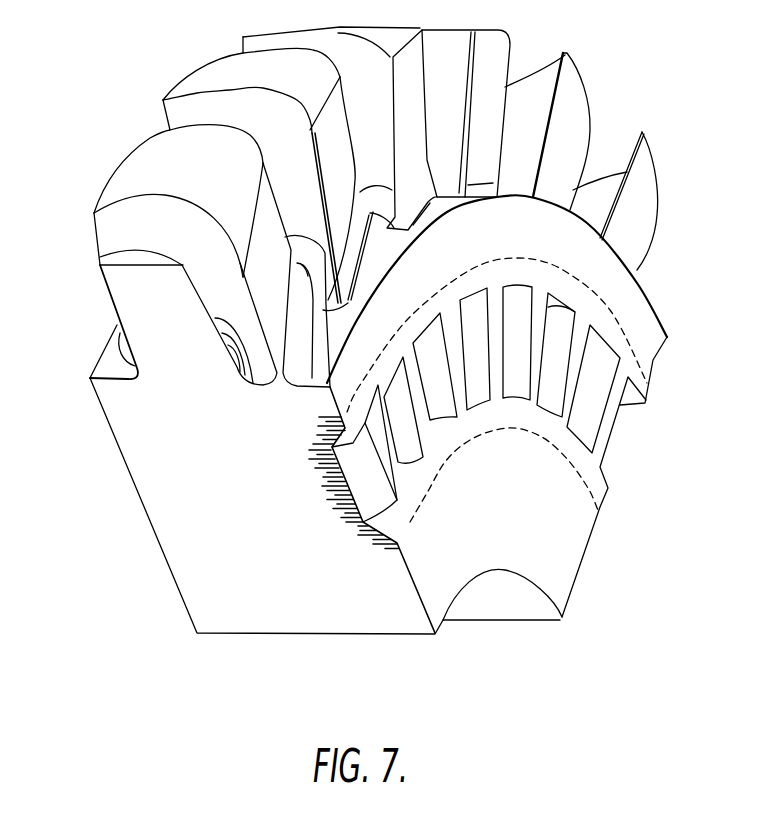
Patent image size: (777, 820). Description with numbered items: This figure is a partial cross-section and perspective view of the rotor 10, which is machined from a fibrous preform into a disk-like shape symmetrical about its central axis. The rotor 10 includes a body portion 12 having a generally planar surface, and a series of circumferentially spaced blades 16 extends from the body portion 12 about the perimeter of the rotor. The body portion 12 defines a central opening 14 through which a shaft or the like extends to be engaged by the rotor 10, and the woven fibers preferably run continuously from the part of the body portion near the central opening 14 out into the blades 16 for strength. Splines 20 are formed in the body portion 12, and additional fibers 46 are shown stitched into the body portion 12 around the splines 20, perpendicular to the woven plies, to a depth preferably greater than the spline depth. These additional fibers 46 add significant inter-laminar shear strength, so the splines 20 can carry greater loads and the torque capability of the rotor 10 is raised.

The rotor 10 is at (667, 230).
The body portion 12 is at (548, 525).
The central opening 14 is at (500, 613).
The blades 16 is at (157, 162).
The splines 20 is at (555, 368).
The additional fibers 46 is at (327, 430).